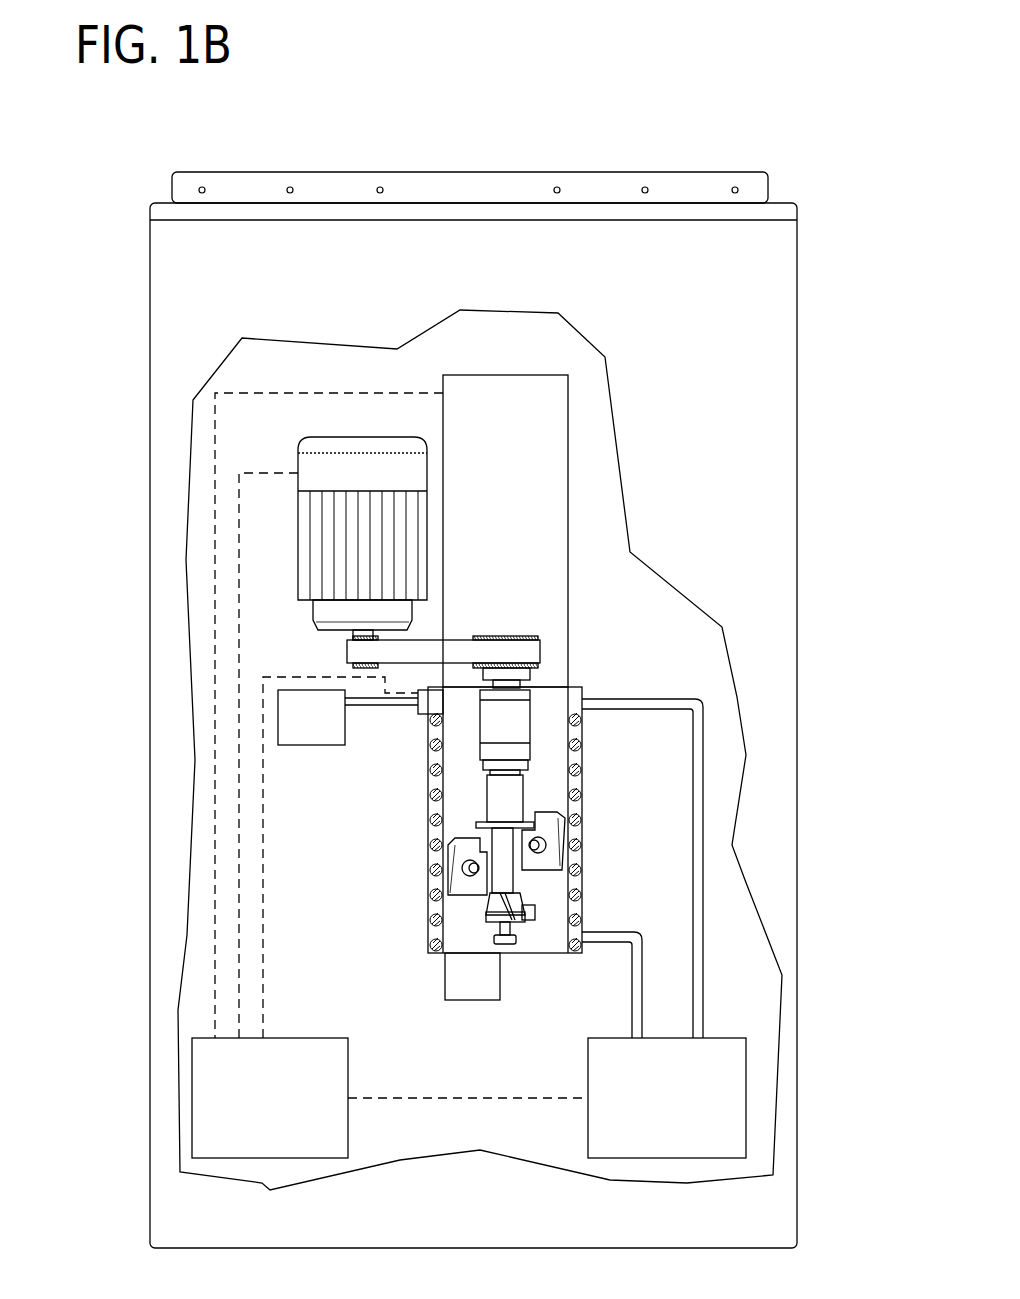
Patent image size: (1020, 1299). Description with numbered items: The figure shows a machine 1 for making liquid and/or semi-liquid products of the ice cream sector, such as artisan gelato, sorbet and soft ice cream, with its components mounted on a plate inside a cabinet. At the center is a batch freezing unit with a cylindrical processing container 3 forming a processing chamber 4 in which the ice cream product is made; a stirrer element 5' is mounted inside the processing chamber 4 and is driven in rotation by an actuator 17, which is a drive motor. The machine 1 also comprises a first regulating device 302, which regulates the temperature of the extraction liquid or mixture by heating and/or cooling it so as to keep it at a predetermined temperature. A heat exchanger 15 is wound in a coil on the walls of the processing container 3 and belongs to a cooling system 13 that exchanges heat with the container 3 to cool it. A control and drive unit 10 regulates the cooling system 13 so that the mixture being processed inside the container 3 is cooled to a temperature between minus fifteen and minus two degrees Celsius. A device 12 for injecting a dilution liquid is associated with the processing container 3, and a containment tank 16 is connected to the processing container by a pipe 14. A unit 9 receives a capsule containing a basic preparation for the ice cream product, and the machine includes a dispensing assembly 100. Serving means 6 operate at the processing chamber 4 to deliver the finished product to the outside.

The machine 1 is at (784, 148).
The unit for receiving a capsule 9 is at (480, 750).
The dispensing assembly 100 is at (588, 510).
The first regulating device 302 is at (220, 538).
The actuator 17 is at (290, 553).
The containment tank 16 is at (326, 732).
The pipe 14 is at (378, 716).
The device for injecting a dilution liquid 12 is at (418, 724).
The processing container 3 is at (556, 750).
The processing chamber 4 is at (470, 800).
The heat exchanger 15 is at (588, 800).
The serving means 6 is at (438, 972).
The tool 5' is at (517, 969).
The control and drive unit 10 is at (282, 1108).
The cooling system 13 is at (680, 1108).